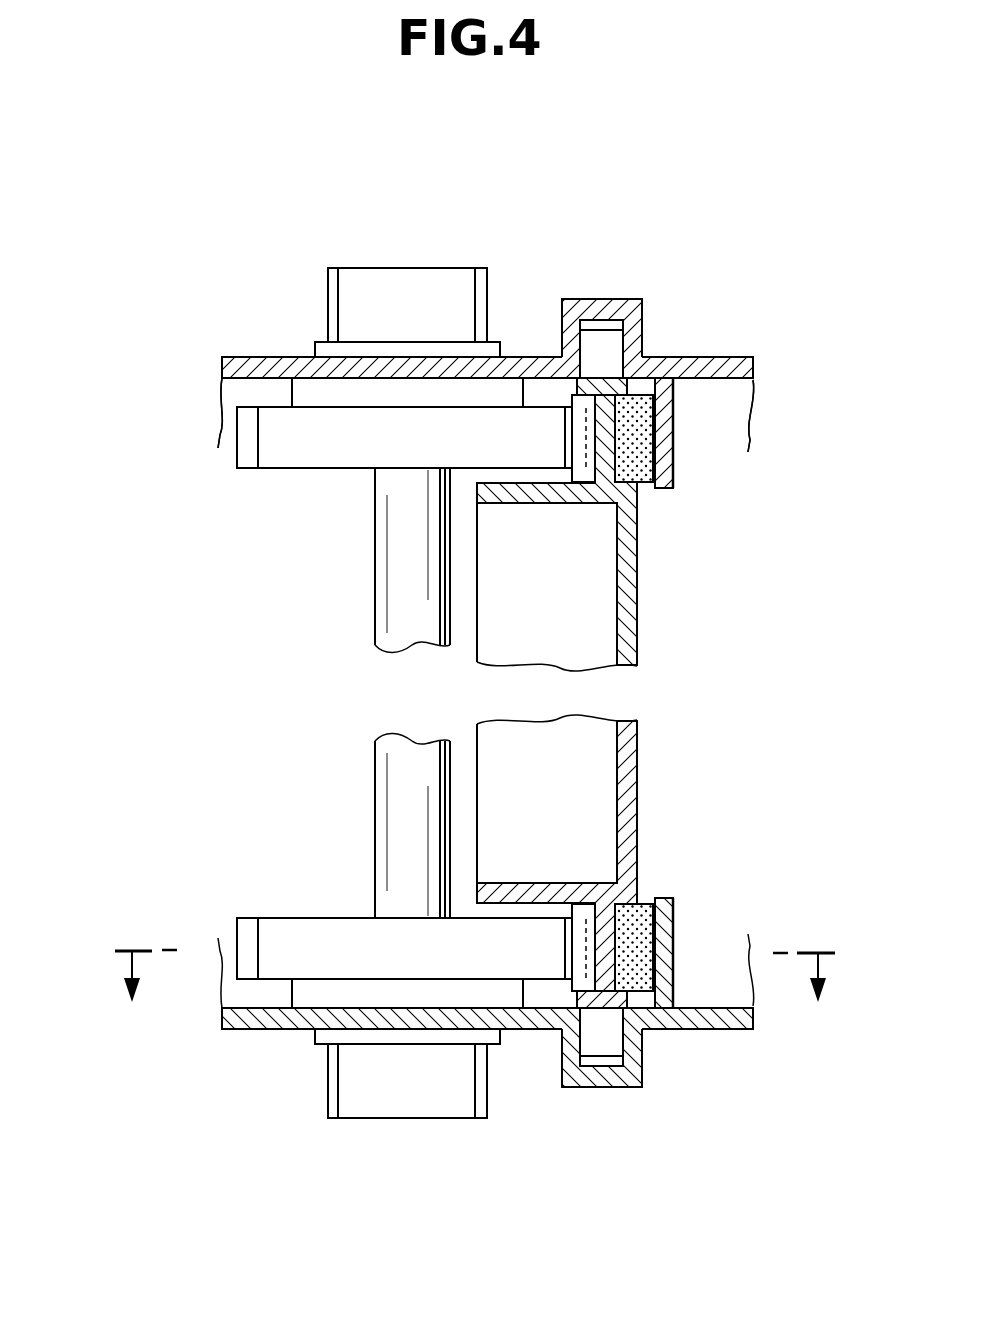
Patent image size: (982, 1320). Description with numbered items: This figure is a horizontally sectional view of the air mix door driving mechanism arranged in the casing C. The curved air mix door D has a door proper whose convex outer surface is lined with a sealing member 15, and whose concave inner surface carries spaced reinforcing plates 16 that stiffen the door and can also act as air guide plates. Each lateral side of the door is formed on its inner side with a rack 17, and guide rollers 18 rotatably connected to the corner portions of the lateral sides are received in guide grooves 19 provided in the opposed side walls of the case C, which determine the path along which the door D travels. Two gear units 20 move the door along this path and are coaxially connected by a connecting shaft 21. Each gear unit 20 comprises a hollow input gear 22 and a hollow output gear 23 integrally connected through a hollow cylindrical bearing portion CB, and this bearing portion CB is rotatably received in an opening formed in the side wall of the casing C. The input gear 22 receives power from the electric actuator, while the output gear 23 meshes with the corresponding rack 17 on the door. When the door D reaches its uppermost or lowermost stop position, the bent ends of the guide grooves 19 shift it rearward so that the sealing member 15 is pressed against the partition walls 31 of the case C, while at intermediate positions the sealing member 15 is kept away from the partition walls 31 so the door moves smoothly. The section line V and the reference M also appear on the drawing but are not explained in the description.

The sealing member 15 is at (640, 460).
The reinforcing plate 16 is at (542, 503).
The rack 17 is at (570, 403).
The guide roller 18 is at (583, 358).
The guide groove 19 is at (610, 347).
The gear unit 20 is at (299, 497).
The connecting shaft 21 is at (375, 738).
The input gear 22 is at (327, 297).
The output gear 23 is at (273, 473).
The partition wall 31 is at (677, 417).
The casing C is at (253, 357).
The cylindrical bearing portion CB is at (313, 357).
The air mix door D is at (690, 566).
The motor M is at (185, 572).
The section line V is at (479, 980).